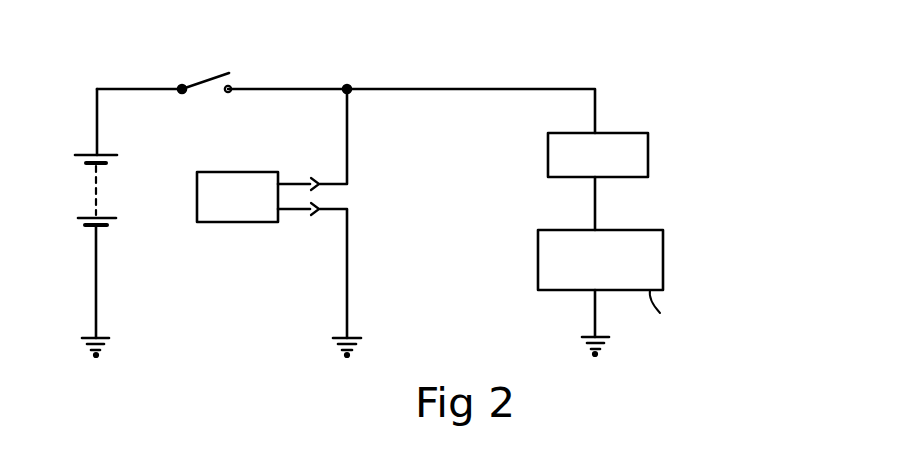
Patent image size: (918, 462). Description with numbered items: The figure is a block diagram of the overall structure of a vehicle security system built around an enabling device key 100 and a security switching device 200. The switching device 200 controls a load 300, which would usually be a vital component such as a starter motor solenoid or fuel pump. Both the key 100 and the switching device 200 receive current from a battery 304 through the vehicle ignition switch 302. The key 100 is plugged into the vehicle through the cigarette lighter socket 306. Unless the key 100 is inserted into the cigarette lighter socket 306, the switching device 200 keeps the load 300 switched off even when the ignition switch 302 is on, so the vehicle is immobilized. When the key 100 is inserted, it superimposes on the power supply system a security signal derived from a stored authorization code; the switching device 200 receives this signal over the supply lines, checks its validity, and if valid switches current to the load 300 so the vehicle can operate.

The key 100 is at (231, 172).
The security switching device 200 is at (538, 262).
The load 300 is at (548, 150).
The ignition switch 302 is at (206, 80).
The battery 304 is at (88, 153).
The cigarette lighter socket 306 is at (350, 197).